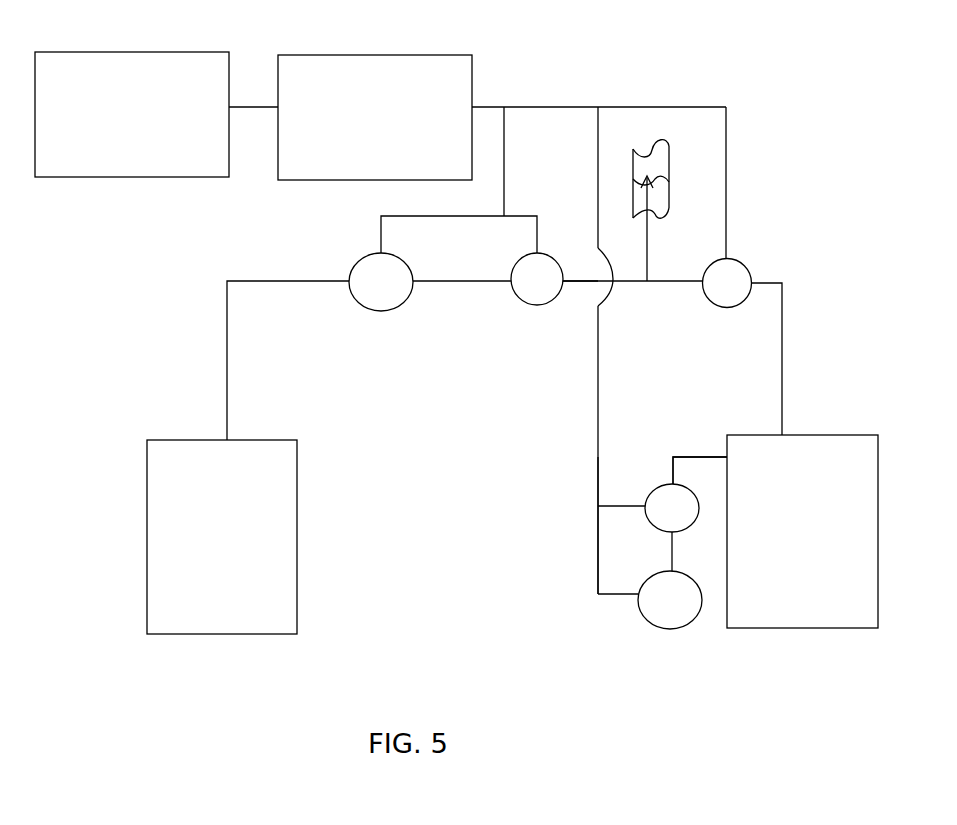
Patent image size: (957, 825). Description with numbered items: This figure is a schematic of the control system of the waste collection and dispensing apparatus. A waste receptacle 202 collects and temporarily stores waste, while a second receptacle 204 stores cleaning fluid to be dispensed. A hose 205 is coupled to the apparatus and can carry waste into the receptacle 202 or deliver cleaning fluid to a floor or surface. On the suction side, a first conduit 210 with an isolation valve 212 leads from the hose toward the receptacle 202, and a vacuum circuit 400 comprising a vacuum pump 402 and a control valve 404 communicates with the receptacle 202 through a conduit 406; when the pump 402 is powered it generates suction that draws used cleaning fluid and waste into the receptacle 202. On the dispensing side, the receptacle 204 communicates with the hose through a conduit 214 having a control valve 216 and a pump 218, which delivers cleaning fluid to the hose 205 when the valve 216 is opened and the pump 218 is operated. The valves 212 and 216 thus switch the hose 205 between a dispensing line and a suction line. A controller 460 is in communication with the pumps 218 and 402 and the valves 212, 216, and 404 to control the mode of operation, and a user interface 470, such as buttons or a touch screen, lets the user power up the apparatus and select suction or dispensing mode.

The user interface 470 is at (124, 74).
The controller 460 is at (376, 74).
The hose 205 is at (670, 161).
The first conduit 210 is at (658, 281).
The isolation valve 212 is at (734, 274).
The pump 218 is at (362, 274).
The control valve 216 is at (532, 295).
The conduit 214 is at (578, 279).
The vacuum circuit 400 is at (666, 443).
The conduit 406 is at (700, 457).
The control valve 404 is at (682, 510).
The vacuum pump 402 is at (660, 611).
The receptacle 202 is at (788, 608).
The second receptacle 204 is at (209, 605).